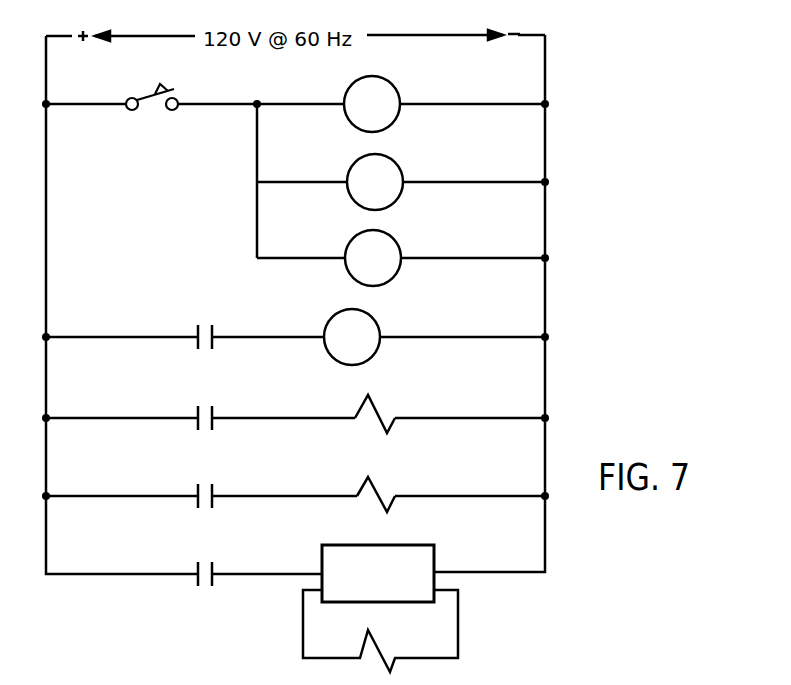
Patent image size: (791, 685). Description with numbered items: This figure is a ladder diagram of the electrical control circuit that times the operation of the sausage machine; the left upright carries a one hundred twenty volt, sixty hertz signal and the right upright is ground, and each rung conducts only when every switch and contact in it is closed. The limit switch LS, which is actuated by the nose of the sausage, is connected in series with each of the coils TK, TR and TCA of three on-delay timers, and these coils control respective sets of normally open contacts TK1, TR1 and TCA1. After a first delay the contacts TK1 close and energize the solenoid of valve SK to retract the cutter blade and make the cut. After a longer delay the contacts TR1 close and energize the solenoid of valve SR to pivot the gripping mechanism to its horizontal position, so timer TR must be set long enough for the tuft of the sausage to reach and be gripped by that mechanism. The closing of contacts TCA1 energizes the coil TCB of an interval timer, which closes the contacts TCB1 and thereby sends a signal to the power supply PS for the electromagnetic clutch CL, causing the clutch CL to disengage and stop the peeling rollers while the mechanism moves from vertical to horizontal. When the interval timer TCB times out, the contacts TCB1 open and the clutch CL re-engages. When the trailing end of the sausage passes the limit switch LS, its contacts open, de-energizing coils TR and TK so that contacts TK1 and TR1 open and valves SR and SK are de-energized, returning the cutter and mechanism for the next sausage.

The limit switch LS is at (152, 108).
The coil of on-delay timer TK is at (416, 104).
The coil of on-delay timer TR is at (419, 182).
The coil of on-delay timer TCA is at (418, 258).
The coil of interval timer TCB is at (414, 337).
The normally open contacts TCA1 is at (196, 325).
The normally open contacts TK1 is at (204, 406).
The normally open contacts TR1 is at (204, 482).
The contacts of interval timer TCB1 is at (211, 559).
The solenoid of valve SK is at (396, 410).
The solenoid of valve SR is at (386, 489).
The power supply PS is at (378, 573).
The electromagnetic clutch CL is at (380, 631).